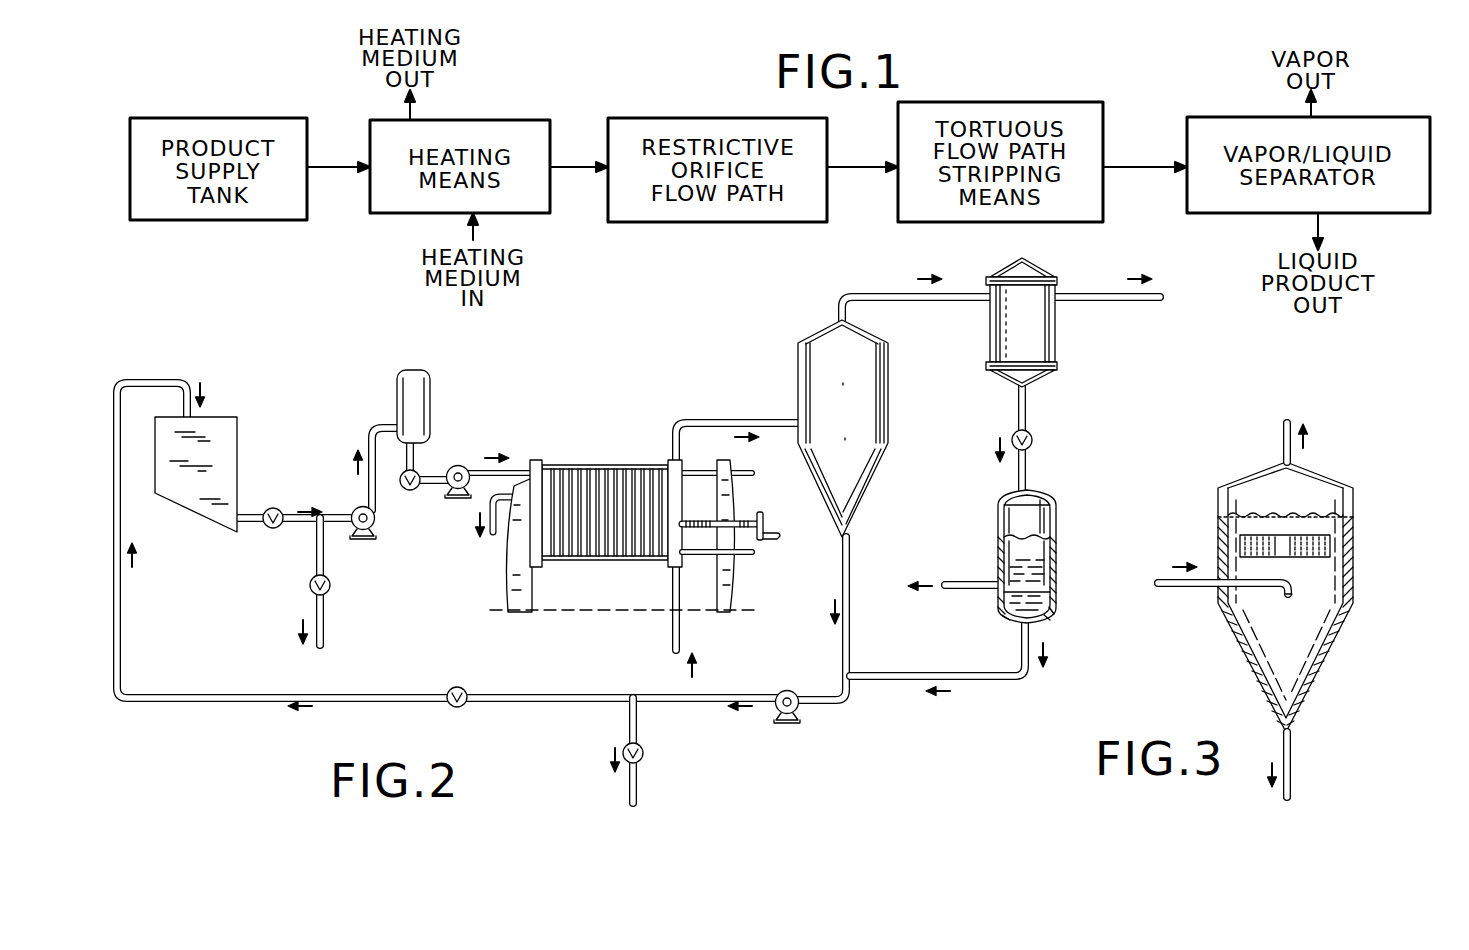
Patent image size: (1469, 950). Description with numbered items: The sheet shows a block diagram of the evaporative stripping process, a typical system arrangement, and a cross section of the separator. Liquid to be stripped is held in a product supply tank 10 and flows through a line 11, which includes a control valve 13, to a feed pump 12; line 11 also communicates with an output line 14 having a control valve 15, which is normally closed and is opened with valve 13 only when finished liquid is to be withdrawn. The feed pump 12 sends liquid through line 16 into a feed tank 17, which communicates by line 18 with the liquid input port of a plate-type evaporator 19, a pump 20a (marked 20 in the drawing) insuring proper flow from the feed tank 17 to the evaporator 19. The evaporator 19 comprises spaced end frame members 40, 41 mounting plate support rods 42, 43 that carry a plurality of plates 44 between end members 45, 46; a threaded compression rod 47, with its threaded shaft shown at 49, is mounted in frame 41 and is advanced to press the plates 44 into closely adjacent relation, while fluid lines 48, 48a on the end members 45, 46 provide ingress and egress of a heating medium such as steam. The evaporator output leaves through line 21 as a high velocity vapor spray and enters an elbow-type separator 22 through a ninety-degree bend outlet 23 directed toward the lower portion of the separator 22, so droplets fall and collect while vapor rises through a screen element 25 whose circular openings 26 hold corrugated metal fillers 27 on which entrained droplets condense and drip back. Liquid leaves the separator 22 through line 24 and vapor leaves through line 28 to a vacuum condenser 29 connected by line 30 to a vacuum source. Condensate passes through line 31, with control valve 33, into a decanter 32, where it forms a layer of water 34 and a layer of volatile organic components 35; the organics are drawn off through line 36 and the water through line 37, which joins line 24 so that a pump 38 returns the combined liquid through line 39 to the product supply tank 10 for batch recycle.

In FIG. 2, the product supply tank 10 is at (237, 447).
In FIG. 2, the line 11 is at (292, 514).
In FIG. 2, the feed pump 12 is at (374, 524).
In FIG. 2, the control valve 13 is at (273, 528).
In FIG. 2, the output line 14 is at (325, 563).
In FIG. 2, the control valve 15 is at (310, 588).
In FIG. 2, the line 16 is at (368, 438).
In FIG. 2, the feed tank 17 is at (403, 398).
In FIG. 2, the line 18 is at (415, 472).
In FIG. 2, the plate-type evaporator 19 is at (619, 505).
In FIG. 2, the pump 20 is at (462, 488).
In FIG. 2, the pump 20a is at (466, 472).
In FIG. 2, the line 21 is at (747, 423).
In FIG. 3, the line 21 is at (1183, 590).
In FIG. 2, the elbow-type separator 22 is at (798, 370).
In FIG. 3, the elbow-type separator 22 is at (1355, 560).
In FIG. 3, the 90° bend outlet 23 is at (1294, 587).
In FIG. 2, the line 24 is at (851, 628).
In FIG. 3, the line 24 is at (1291, 765).
In FIG. 3, the screen element 25 is at (1338, 535).
In FIG. 3, the openings 26 is at (1235, 543).
In FIG. 3, the corrugated metal filler 27 is at (1325, 535).
In FIG. 2, the line 28 is at (931, 298).
In FIG. 3, the line 28 is at (1283, 441).
In FIG. 2, the vacuum condenser 29 is at (1045, 350).
In FIG. 2, the line 30 is at (1131, 300).
In FIG. 2, the line 31 is at (1027, 406).
In FIG. 2, the decanter 32 is at (1028, 556).
In FIG. 2, the control valve 33 is at (1032, 440).
In FIG. 2, the layer of water 34 is at (1040, 609).
In FIG. 2, the layer of volatile organic components 35 is at (1018, 574).
In FIG. 2, the line 36 is at (965, 589).
In FIG. 2, the line 37 is at (940, 674).
In FIG. 2, the pump 38 is at (784, 723).
In FIG. 2, the line 39 is at (155, 383).
In FIG. 2, the end frame member 40 is at (508, 591).
In FIG. 2, the end frame member 41 is at (733, 590).
In FIG. 2, the plate support rod 42 is at (743, 473).
In FIG. 2, the plate support rod 43 is at (745, 553).
In FIG. 2, the plates 44 is at (566, 450).
In FIG. 2, the end member 45 is at (536, 460).
In FIG. 2, the end member 46 is at (672, 563).
In FIG. 2, the threaded compression rod 47 is at (763, 512).
In FIG. 2, the fluid line 48 is at (490, 534).
In FIG. 2, the fluid line 48a is at (672, 634).
In FIG. 2, the tightening screw 49 is at (704, 540).